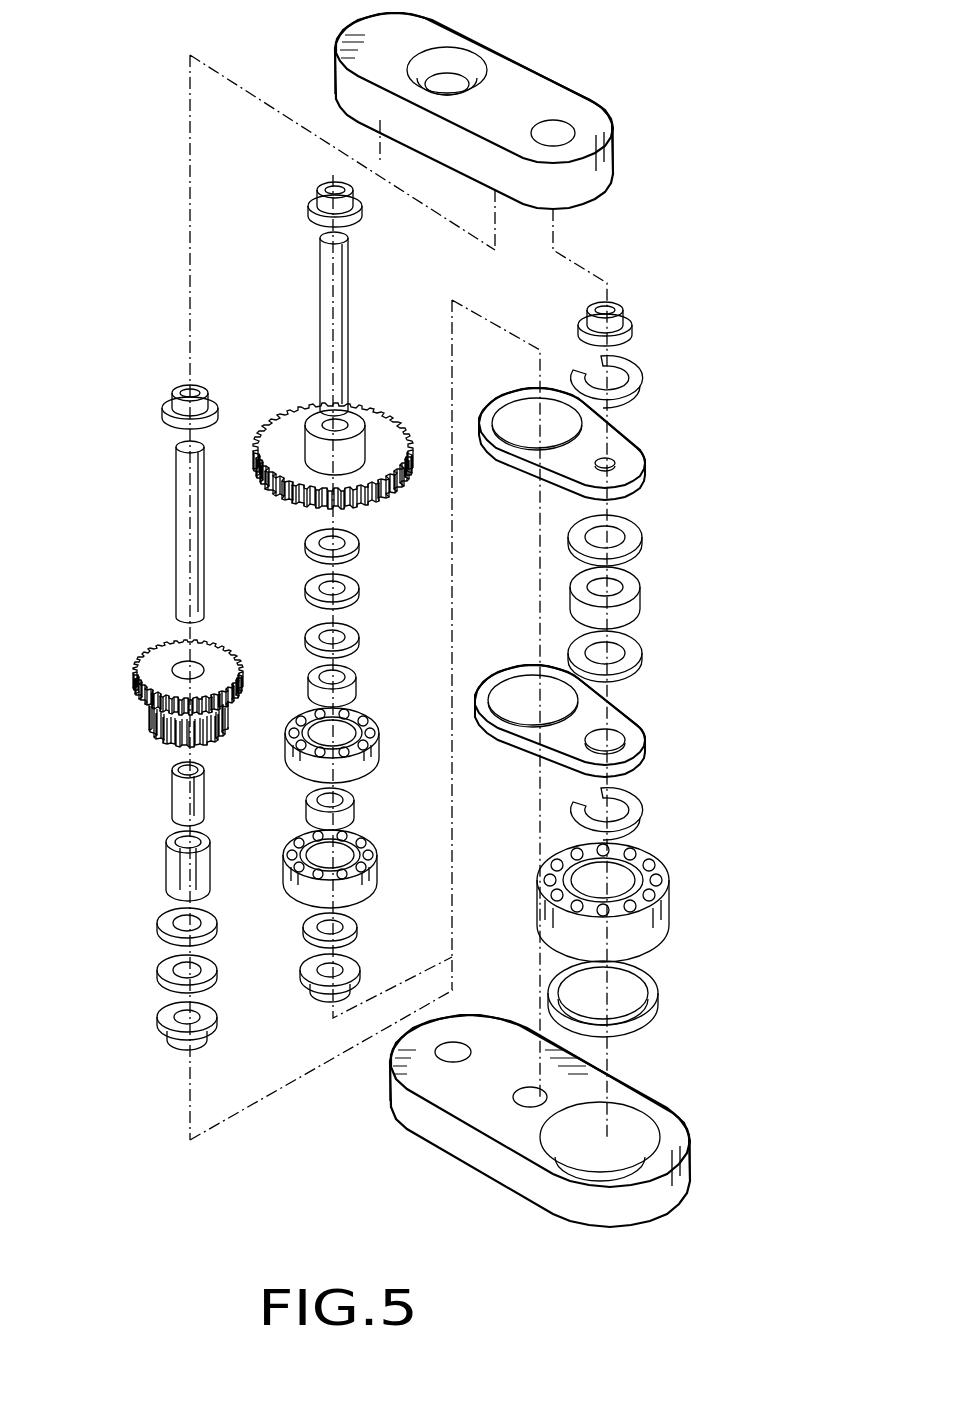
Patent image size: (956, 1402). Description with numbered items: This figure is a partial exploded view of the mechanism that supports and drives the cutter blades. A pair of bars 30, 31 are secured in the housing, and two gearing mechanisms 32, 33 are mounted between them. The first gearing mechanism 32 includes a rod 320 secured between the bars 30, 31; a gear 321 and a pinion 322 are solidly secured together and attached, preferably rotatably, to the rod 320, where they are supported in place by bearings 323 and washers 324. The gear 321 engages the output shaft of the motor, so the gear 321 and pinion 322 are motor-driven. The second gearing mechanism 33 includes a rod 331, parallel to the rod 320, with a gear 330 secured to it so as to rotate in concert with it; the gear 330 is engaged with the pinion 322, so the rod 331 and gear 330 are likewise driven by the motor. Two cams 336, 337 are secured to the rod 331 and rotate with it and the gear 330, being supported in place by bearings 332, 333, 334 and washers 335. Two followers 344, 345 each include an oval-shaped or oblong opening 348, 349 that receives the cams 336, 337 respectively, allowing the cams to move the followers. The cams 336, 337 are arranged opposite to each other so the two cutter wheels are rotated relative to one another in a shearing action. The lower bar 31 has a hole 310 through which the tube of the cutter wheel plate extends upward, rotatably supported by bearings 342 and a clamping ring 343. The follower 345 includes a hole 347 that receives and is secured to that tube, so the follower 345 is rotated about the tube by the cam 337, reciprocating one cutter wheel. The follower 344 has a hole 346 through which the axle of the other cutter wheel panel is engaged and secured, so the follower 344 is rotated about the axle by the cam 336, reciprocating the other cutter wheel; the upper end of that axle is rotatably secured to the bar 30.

The bar 30 is at (500, 111).
The bar 31 is at (567, 1121).
The hole 310 is at (642, 1139).
The gearing mechanism 32 is at (152, 717).
The rod 320 is at (158, 532).
The gear 321 is at (161, 688).
The pinion 322 is at (165, 744).
The bearings 323 is at (157, 875).
The washers 324 is at (163, 970).
The gearing mechanism 33 is at (334, 607).
The gear 330 is at (339, 431).
The rod 331 is at (305, 324).
The bearing 332 is at (358, 745).
The bearing 333 is at (357, 869).
The bearing 334 is at (325, 592).
The washers 335 is at (358, 569).
The cam 336 is at (359, 665).
The cam 337 is at (361, 800).
The bearings 342 is at (631, 902).
The clamping ring 343 is at (637, 590).
The follower 344 is at (595, 457).
The follower 345 is at (590, 741).
The hole 346 is at (653, 451).
The hole 347 is at (638, 720).
The oblong opening 348 is at (532, 462).
The oblong opening 349 is at (529, 746).